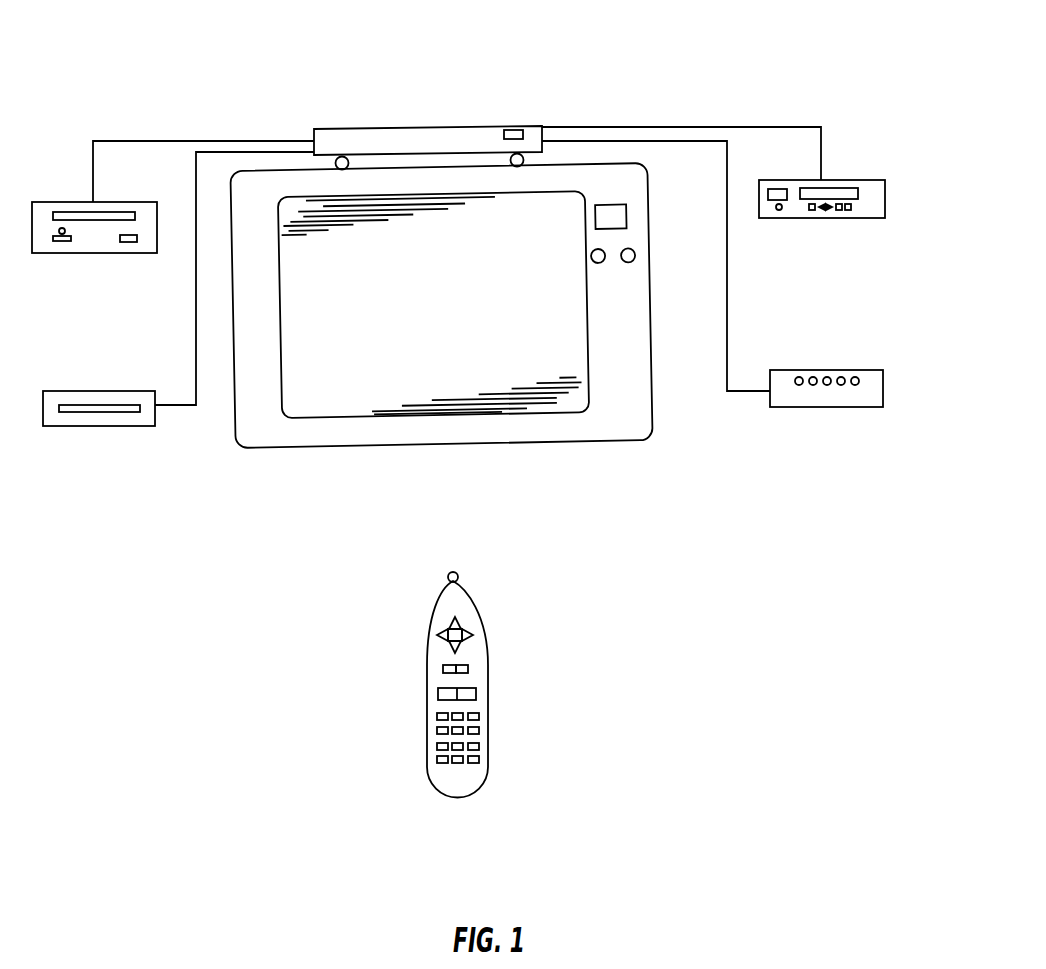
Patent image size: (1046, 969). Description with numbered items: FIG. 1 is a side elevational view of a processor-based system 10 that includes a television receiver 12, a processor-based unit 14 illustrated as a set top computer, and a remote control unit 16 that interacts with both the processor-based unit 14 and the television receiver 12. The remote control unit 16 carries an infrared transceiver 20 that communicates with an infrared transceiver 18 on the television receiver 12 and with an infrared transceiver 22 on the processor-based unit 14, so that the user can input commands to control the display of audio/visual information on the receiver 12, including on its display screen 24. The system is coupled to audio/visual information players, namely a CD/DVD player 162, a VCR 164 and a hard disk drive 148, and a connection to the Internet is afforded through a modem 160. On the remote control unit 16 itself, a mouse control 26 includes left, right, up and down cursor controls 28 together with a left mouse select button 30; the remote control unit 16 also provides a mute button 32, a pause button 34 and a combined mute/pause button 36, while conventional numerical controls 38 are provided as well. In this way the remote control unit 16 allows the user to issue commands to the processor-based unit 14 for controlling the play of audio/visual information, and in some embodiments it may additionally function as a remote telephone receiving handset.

The processor-based system 10 is at (708, 83).
The television receiver 12 is at (652, 297).
The processor-based unit 14 is at (428, 128).
The remote control unit 16 is at (480, 597).
The infrared transceiver 18 is at (628, 218).
The infrared transceiver 20 is at (456, 573).
The infrared transceiver 22 is at (521, 131).
The display screen 24 is at (573, 356).
The mouse control 26 is at (490, 622).
The cursor controls 28 is at (450, 627).
The left mouse select button 30 is at (450, 643).
The mute button 32 is at (472, 665).
The pause button 34 is at (443, 673).
The combined mute/pause button 36 is at (468, 692).
The numerical controls 38 is at (474, 743).
The hard disk drive 148 is at (120, 391).
The modem 160 is at (836, 370).
The CD/DVD player 162 is at (117, 202).
The VCR 164 is at (824, 180).